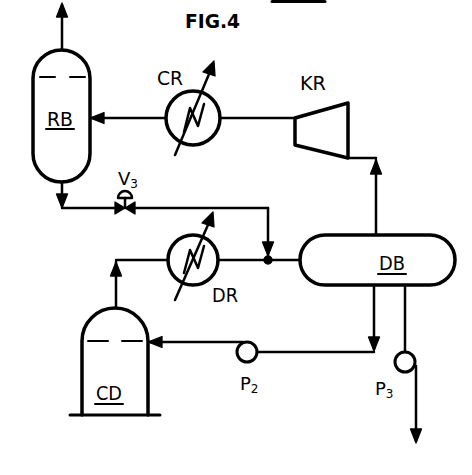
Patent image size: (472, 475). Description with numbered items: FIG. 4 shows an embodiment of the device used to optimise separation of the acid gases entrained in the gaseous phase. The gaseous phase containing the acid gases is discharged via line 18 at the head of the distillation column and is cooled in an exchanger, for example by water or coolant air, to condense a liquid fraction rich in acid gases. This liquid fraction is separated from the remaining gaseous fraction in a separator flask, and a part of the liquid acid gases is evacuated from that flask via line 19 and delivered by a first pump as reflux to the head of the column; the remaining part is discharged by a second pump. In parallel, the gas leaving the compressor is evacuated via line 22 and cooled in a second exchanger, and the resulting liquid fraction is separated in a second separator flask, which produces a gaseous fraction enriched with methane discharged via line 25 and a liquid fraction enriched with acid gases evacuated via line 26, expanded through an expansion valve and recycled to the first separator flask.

The line 25 is at (62, 40).
The line 26 is at (76, 209).
The line 18 is at (115, 292).
The line 22 is at (380, 159).
The line 19 is at (305, 353).